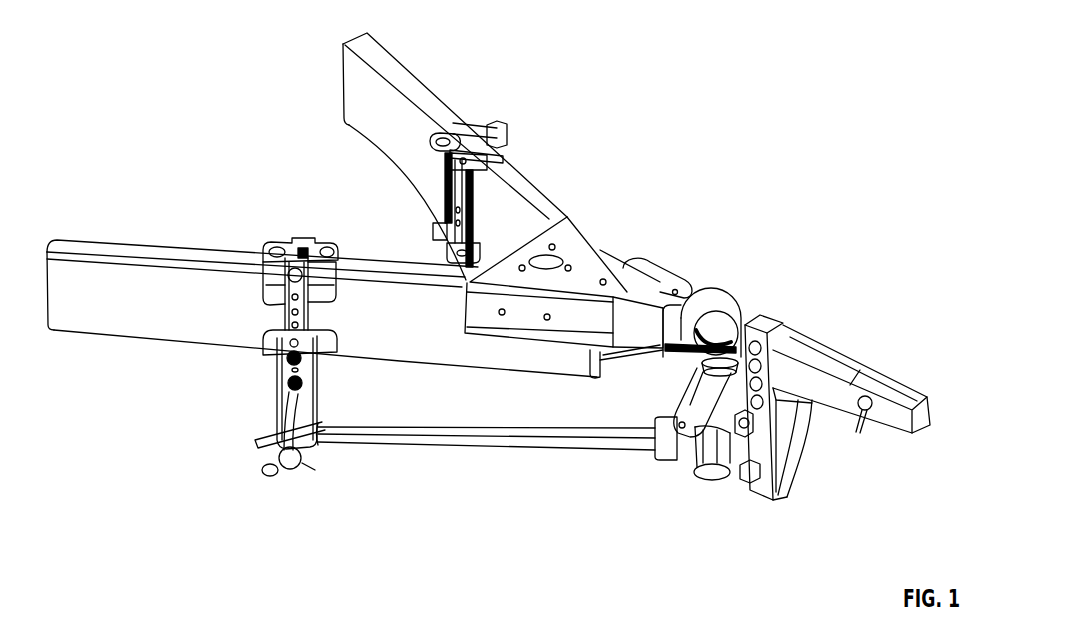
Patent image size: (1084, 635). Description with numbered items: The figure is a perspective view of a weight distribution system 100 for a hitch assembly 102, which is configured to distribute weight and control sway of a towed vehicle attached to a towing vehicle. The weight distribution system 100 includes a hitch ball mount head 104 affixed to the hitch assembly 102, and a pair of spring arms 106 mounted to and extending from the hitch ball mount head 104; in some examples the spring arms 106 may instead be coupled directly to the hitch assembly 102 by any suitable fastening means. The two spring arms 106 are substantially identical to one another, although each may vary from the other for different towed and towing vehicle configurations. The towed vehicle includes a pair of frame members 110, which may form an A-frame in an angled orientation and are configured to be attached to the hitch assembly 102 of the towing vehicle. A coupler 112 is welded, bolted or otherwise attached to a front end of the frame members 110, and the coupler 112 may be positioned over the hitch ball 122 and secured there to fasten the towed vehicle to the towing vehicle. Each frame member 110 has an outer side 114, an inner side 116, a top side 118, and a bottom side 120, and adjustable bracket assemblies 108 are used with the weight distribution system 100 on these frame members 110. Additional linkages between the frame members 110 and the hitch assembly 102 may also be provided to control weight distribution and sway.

The weight distribution system 100 is at (597, 120).
The hitch assembly 102 is at (910, 388).
The hitch ball mount head 104 is at (708, 404).
The spring arms 106 is at (470, 427).
The adjustable bracket assemblies 108 is at (477, 130).
The frame members 110 is at (342, 60).
The coupler 112 is at (573, 232).
The outer side 114 is at (390, 343).
The inner side 116 is at (417, 168).
The top side 118 is at (410, 87).
The bottom side 120 is at (379, 152).
The hitch ball 122 is at (720, 368).